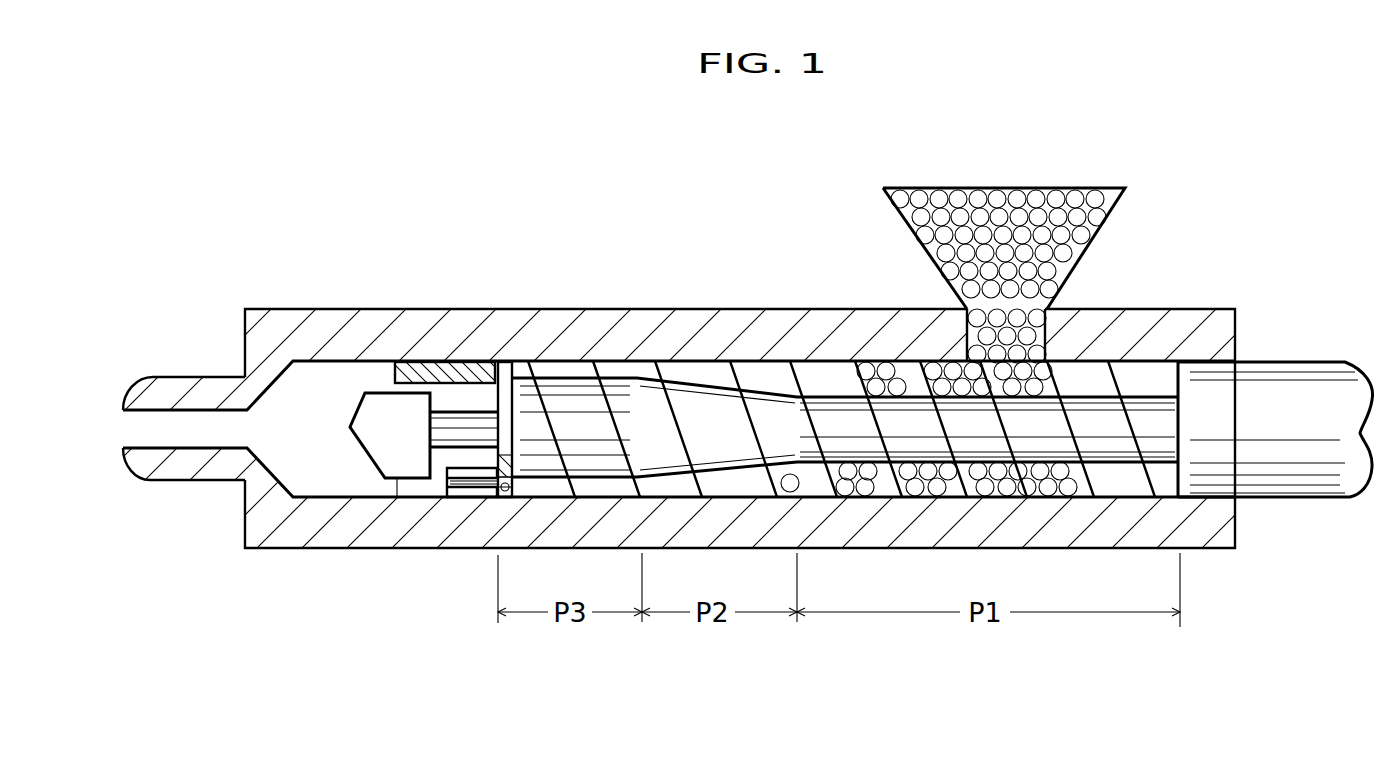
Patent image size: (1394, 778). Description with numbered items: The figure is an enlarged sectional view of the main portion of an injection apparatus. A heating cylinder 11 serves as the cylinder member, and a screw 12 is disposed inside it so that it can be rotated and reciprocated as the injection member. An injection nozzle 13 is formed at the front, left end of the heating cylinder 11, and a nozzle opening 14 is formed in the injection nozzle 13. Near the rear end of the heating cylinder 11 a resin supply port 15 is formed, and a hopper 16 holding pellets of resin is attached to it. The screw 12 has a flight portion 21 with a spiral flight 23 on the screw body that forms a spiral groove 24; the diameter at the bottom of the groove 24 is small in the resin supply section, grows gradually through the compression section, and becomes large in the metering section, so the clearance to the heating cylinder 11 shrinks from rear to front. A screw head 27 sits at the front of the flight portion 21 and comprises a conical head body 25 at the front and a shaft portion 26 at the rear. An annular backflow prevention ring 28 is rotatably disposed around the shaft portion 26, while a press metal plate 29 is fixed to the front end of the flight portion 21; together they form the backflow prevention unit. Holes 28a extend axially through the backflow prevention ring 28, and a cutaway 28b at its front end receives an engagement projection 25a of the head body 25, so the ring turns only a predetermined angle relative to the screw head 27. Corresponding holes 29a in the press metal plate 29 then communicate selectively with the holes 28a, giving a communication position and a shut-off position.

The heating cylinder 11 is at (551, 304).
The screw 12 is at (942, 337).
The injection nozzle 13 is at (207, 363).
The nozzle opening 14 is at (126, 430).
The resin supply port 15 is at (1050, 306).
The hopper 16 is at (1115, 213).
The flight portion 21 is at (821, 491).
The flight 23 is at (665, 368).
The groove 24 is at (703, 375).
The head body 25 is at (381, 404).
The engagement projection 25a is at (413, 465).
The shaft portion 26 is at (443, 420).
The screw head 27 is at (398, 286).
The backflow prevention ring 28 is at (530, 454).
The hole 28a is at (473, 487).
The cutaway 28b is at (440, 482).
The press metal plate 29 is at (532, 402).
The hole 29a is at (505, 493).